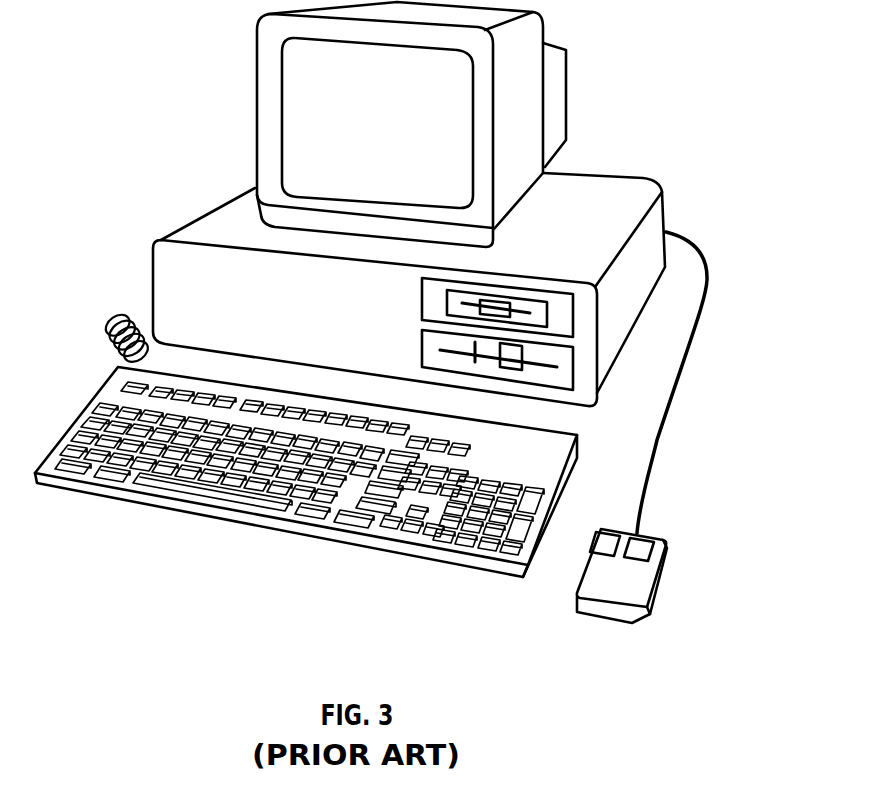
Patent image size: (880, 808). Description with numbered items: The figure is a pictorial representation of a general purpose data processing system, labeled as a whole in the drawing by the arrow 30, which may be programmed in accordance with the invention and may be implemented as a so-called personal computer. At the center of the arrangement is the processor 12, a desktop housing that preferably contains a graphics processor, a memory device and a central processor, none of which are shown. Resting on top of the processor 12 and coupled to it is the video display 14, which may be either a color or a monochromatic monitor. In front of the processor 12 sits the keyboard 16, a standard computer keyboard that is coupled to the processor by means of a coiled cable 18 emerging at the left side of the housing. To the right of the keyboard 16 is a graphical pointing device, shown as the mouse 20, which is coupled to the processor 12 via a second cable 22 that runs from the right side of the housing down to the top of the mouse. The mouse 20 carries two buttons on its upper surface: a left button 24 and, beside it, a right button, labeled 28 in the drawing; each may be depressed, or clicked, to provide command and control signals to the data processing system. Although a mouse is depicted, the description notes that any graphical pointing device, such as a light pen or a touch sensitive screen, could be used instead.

The computer system 30 is at (193, 70).
The video display 14 is at (557, 68).
The processor 12 is at (606, 377).
The cable 18 is at (115, 322).
The keyboard 16 is at (176, 495).
The cable 22 is at (647, 478).
The mouse 20 is at (640, 596).
The left button 24 is at (603, 537).
The mouse button 28 is at (657, 538).